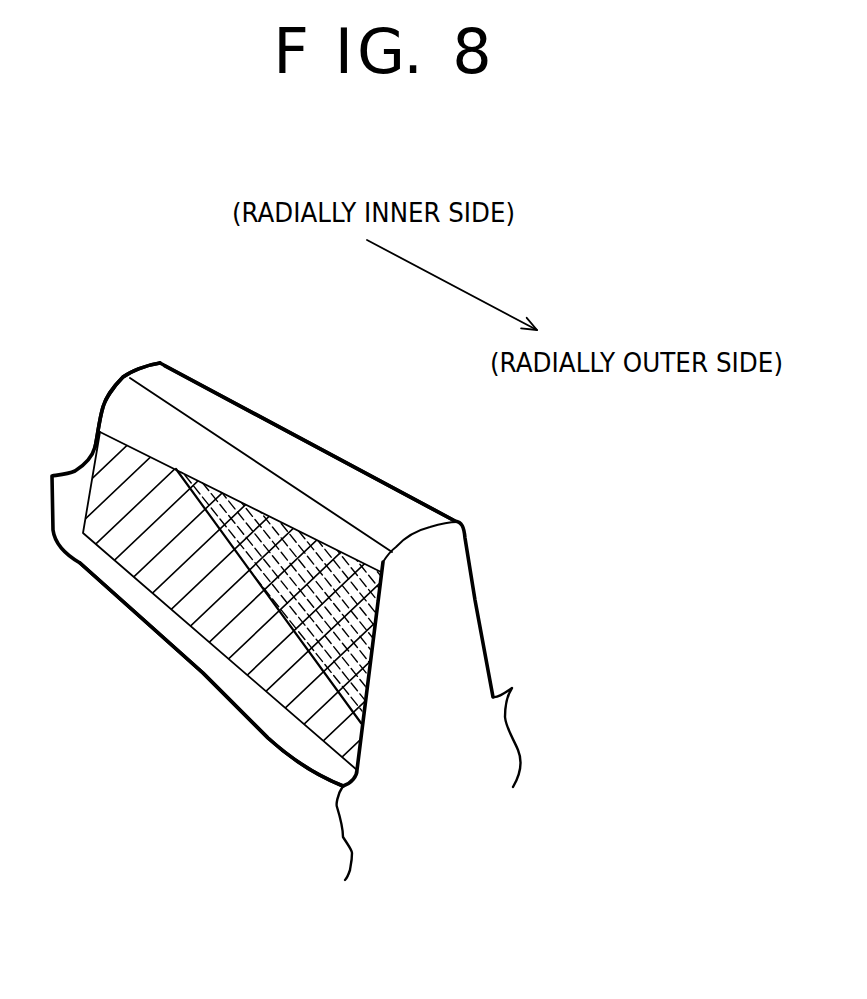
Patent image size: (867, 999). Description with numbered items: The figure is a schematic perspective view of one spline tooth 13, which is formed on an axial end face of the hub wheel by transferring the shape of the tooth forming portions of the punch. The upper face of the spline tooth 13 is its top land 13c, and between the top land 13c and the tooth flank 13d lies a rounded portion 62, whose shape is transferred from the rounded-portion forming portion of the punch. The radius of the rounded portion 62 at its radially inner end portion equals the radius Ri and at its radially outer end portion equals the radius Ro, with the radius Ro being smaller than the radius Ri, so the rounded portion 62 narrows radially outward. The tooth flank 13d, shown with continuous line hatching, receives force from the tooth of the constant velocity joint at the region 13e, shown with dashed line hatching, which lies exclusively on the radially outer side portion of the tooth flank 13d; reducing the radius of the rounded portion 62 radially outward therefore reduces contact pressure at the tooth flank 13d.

The spline tooth 13 is at (383, 483).
The top land 13c is at (310, 467).
The tooth flank 13d is at (227, 633).
The region 13e is at (300, 627).
The rounded portion 62 is at (218, 460).
The radius at radially inner end portion Ri is at (155, 428).
The radius at radially outer end portion Ro is at (388, 560).